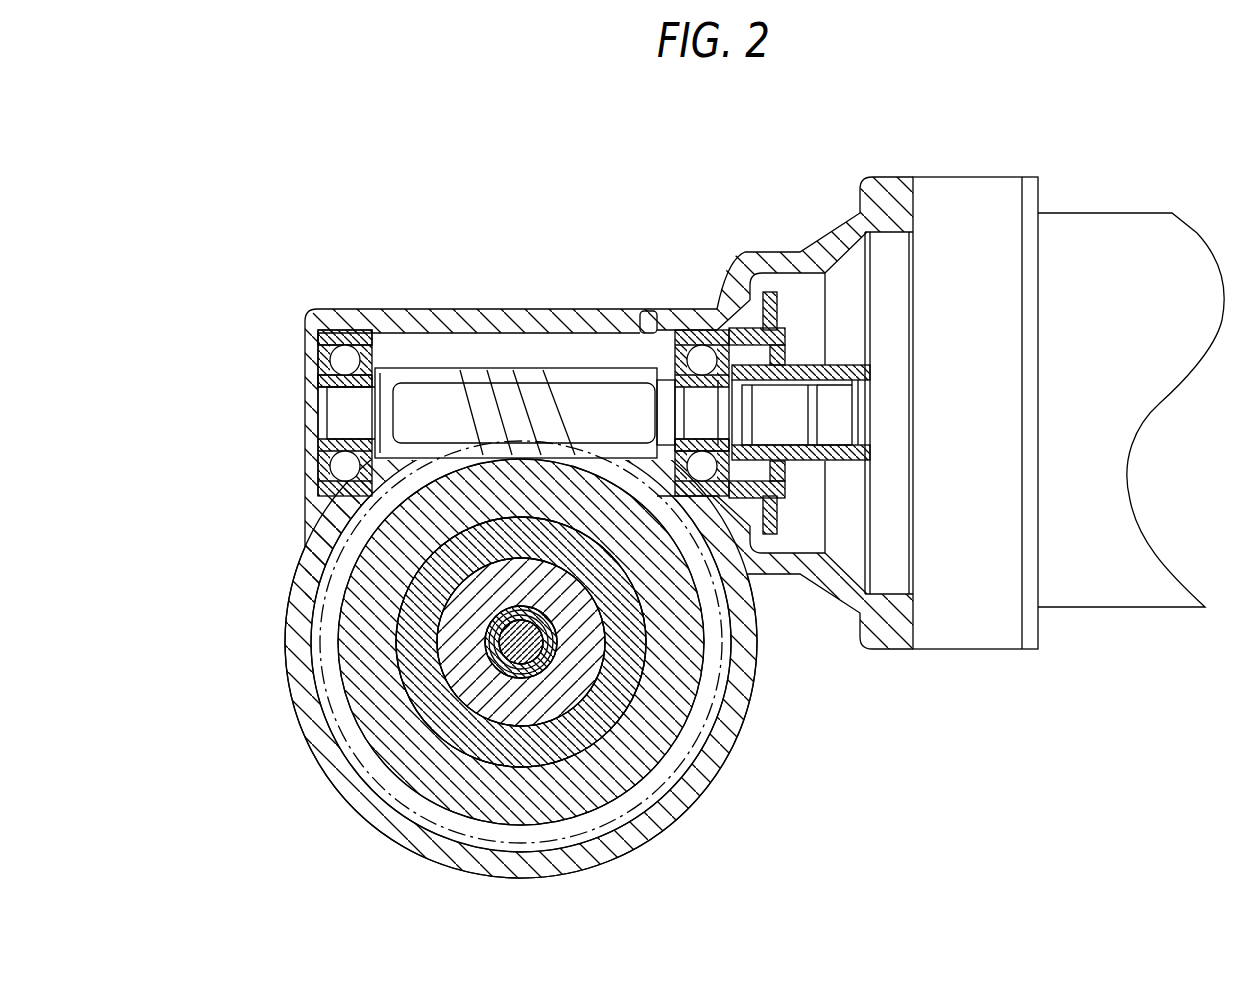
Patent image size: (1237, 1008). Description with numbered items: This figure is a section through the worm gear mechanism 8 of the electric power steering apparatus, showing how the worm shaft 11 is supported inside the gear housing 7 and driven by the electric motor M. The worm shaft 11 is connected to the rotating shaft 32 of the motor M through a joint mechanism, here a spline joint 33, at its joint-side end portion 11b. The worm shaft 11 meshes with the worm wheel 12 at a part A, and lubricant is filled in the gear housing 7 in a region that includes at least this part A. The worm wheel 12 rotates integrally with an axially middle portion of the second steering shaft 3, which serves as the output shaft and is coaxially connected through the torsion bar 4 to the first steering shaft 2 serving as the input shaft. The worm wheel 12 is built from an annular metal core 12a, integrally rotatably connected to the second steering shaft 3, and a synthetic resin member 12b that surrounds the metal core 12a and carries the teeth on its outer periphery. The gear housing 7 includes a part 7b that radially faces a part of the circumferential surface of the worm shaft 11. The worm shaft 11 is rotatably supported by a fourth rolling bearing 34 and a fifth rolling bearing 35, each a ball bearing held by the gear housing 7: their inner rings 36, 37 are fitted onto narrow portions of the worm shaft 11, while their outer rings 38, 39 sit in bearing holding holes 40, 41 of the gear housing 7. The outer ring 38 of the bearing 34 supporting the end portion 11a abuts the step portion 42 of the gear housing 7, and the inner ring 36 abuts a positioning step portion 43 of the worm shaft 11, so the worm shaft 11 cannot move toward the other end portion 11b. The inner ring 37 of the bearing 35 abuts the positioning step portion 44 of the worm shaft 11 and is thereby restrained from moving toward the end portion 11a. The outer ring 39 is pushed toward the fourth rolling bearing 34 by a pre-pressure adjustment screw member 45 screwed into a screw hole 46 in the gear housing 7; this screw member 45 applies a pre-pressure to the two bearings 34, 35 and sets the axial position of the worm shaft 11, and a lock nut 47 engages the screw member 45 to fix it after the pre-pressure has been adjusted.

The first steering shaft 2 is at (503, 673).
The second steering shaft 3 is at (470, 679).
The torsion bar 4 is at (524, 666).
The gear housing 7 is at (655, 823).
The part of gear housing 7b is at (470, 332).
The worm gear mechanism 8 is at (516, 340).
The worm shaft 11 is at (413, 368).
The end portion of worm shaft 11a is at (338, 408).
The other end portion of worm shaft 11b is at (800, 410).
The worm wheel 12 is at (450, 642).
The metal core 12a is at (417, 676).
The synthetic resin member 12b is at (363, 733).
The rotating shaft 32 is at (830, 430).
The spline joint 33 is at (795, 450).
The fourth rolling bearing 34 is at (316, 360).
The fifth rolling bearing 35 is at (663, 360).
The inner ring of fourth rolling bearing 36 is at (322, 460).
The inner ring of fifth rolling bearing 37 is at (688, 435).
The outer ring of fourth rolling bearing 38 is at (355, 342).
The outer ring of fifth rolling bearing 39 is at (720, 335).
The bearing holding hole 40 is at (322, 505).
The bearing holding hole 41 is at (747, 677).
The step portion 42 is at (320, 353).
The bearing inner race 43 is at (333, 389).
The positioning step portion 44 is at (660, 455).
The pre-pressure adjustment screw member 45 is at (788, 333).
The screw hole 46 is at (768, 536).
The lock nut 47 is at (768, 292).
The meshing part A is at (527, 446).
The electric motor M is at (1098, 200).